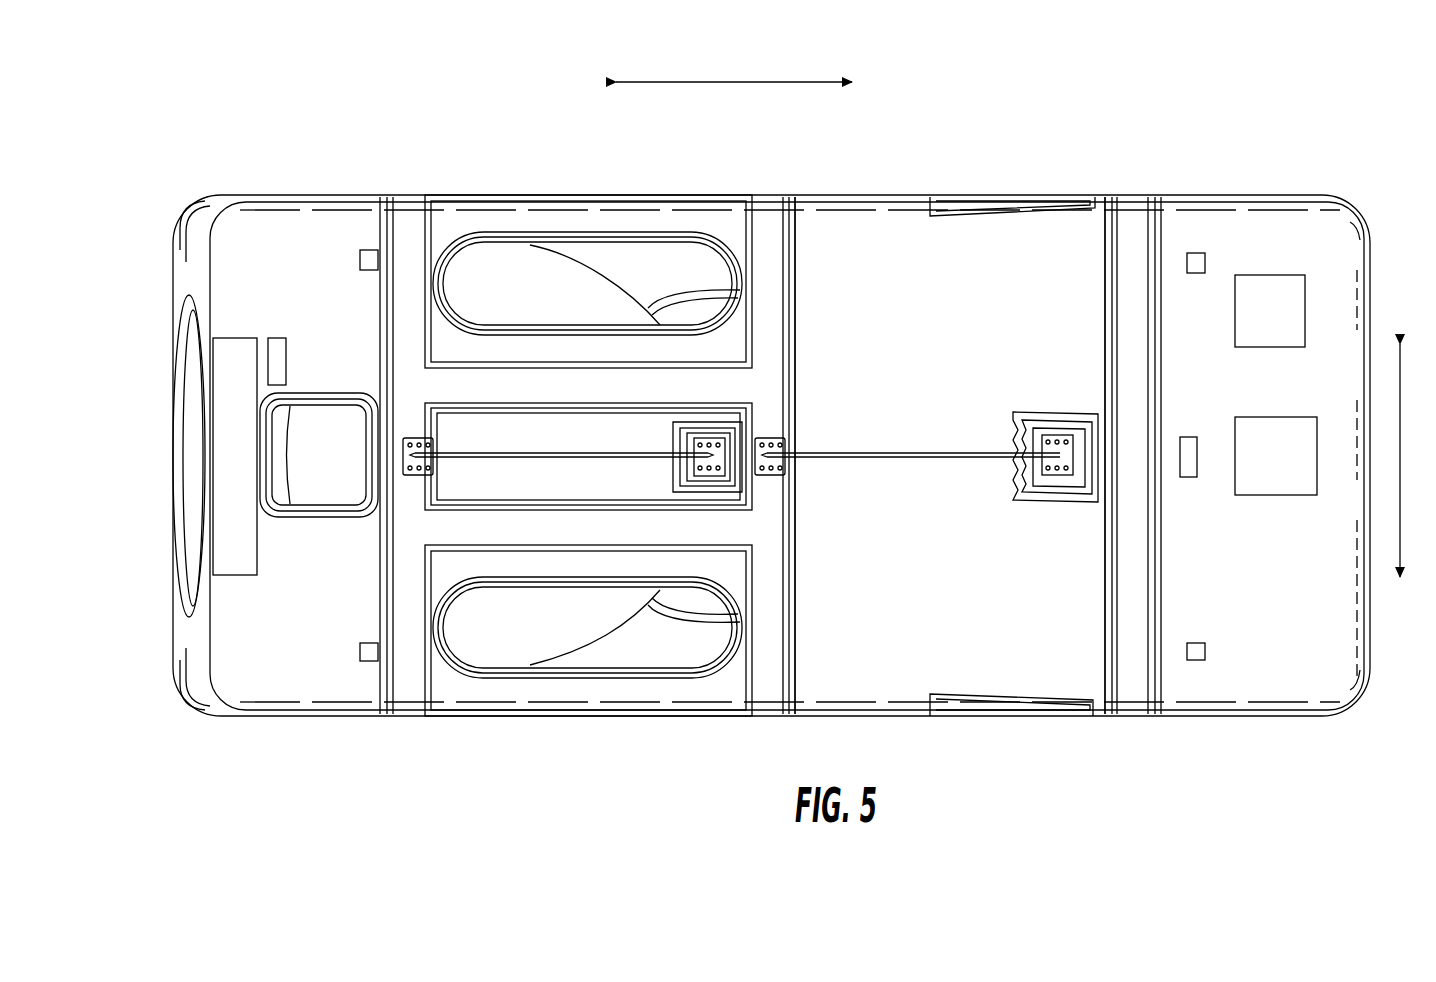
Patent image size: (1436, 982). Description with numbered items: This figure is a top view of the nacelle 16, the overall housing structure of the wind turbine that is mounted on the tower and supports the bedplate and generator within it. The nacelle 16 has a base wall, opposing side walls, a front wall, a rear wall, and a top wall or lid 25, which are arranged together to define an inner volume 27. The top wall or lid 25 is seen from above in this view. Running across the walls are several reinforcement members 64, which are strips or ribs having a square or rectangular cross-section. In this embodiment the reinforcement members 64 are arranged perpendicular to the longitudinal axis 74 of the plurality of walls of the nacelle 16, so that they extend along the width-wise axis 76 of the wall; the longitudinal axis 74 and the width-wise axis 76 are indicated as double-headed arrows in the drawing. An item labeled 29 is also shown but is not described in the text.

The nacelle 16 is at (128, 217).
The top wall or lid 25 is at (866, 235).
The inner volume 27 is at (315, 458).
The upper pocket 29 is at (536, 307).
The reinforcement members 64 is at (515, 527).
The longitudinal axis 74 is at (708, 82).
The width-wise axis 76 is at (1400, 470).